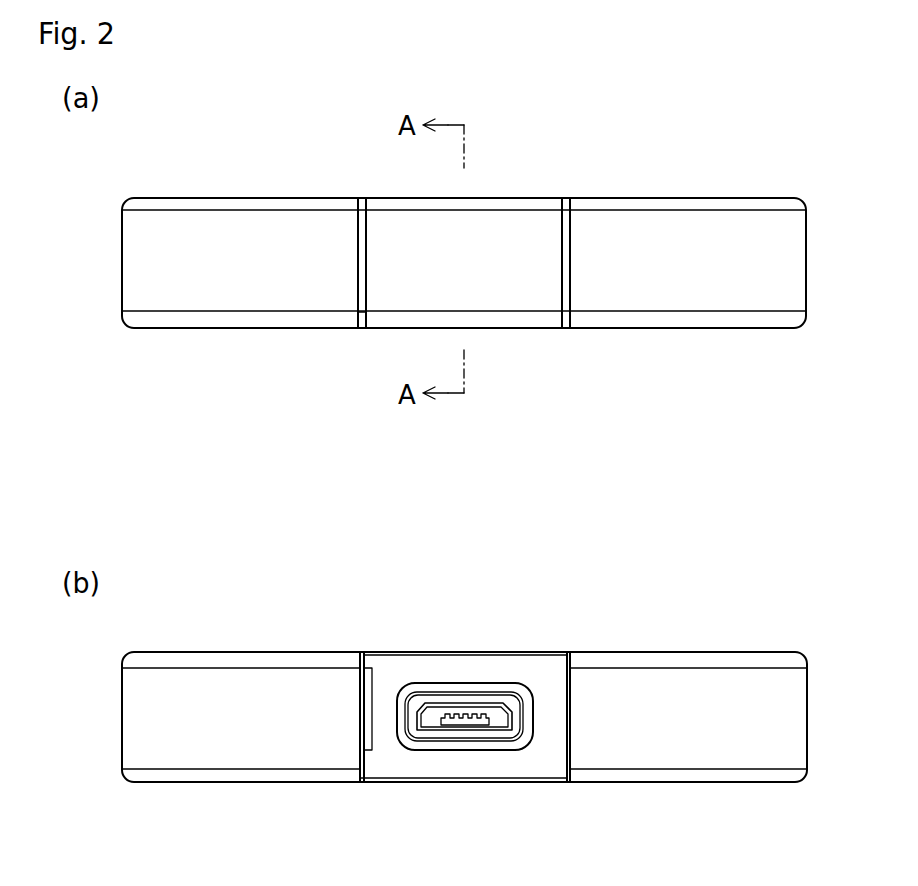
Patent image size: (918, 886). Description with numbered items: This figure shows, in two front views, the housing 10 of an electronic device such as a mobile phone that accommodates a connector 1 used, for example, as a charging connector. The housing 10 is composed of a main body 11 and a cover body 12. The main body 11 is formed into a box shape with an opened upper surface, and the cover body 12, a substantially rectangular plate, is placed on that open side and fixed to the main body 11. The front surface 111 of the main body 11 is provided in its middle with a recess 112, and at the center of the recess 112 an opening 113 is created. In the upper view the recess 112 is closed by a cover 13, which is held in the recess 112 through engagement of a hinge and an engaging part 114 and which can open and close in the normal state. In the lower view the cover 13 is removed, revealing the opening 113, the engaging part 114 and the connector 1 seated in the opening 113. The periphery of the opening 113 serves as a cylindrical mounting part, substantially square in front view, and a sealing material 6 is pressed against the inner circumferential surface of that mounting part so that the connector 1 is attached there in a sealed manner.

The housing 10 is at (495, 477).
The main body 11 is at (806, 250).
The cover body 12 is at (246, 204).
The cover 13 is at (522, 232).
The front surface 111 is at (672, 263).
The recess 112 is at (358, 318).
The opening 113 is at (493, 683).
The engaging part 114 is at (368, 750).
The connector 1 is at (493, 745).
The sealing material 6 is at (425, 690).